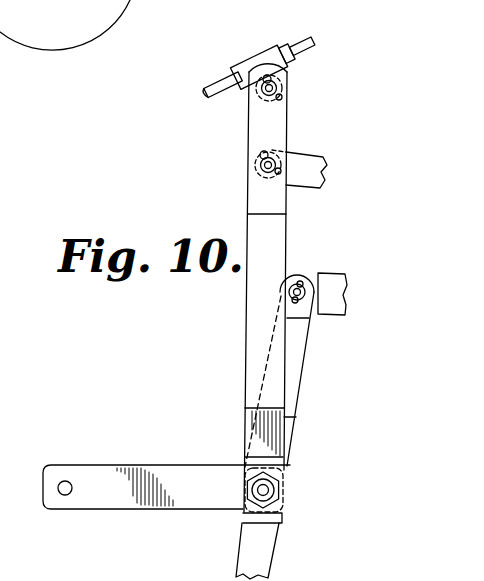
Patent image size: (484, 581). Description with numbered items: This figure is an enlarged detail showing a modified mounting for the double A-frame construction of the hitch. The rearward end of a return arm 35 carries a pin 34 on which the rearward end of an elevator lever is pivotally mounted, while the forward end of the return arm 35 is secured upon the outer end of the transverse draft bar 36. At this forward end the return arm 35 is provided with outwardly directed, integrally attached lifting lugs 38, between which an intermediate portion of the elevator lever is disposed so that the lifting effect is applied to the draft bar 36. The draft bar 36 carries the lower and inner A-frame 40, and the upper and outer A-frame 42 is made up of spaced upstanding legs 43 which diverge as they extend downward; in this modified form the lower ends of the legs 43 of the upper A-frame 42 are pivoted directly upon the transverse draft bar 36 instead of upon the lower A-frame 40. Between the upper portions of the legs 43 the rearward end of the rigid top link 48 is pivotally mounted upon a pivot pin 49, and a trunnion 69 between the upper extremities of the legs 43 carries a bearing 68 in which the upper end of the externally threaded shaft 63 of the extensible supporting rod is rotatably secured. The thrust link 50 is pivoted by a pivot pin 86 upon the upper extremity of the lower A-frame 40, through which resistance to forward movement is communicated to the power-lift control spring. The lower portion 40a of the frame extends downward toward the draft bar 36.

The pin 34 is at (62, 488).
The return arm 35 is at (181, 471).
The transverse draft bar 36 is at (268, 488).
The lifting lug 38 is at (278, 457).
The lower and inner A-frame 40 is at (311, 358).
The lower link arm portion 40a is at (236, 556).
The upper and outer A-frame 42 is at (241, 144).
The leg 43 is at (287, 132).
The rigid top link 48 is at (315, 162).
The pivot pin 49 is at (263, 167).
The thrust link 50 is at (337, 287).
The externally threaded shaft 63 is at (235, 86).
The bearing 68 is at (276, 44).
The trunnion 69 is at (291, 84).
The pivot pin 86 is at (302, 286).